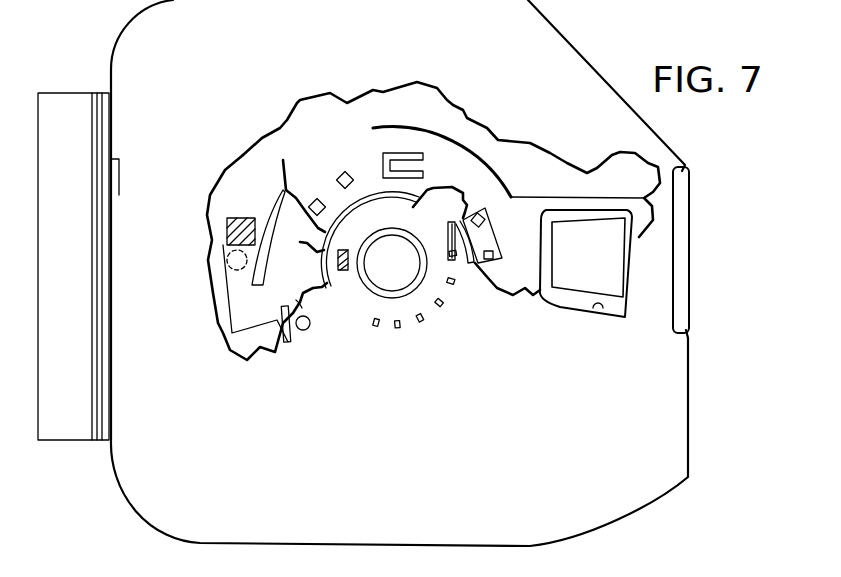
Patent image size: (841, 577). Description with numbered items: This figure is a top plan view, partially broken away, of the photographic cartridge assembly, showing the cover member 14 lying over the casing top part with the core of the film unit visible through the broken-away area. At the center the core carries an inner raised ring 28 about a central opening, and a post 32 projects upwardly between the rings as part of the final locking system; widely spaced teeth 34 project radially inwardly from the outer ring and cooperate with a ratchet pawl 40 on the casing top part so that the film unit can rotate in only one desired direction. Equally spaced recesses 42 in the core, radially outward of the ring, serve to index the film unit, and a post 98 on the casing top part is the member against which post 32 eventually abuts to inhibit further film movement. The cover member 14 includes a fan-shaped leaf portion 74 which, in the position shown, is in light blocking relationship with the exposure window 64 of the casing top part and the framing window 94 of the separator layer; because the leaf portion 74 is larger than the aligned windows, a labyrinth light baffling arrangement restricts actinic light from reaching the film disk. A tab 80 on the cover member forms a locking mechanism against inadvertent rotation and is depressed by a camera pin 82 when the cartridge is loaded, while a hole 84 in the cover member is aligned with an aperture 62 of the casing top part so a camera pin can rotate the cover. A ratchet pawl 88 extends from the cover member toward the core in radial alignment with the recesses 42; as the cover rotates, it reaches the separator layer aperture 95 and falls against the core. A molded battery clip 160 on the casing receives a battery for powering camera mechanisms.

The cover member 14 is at (500, 157).
The inner raised ring 28 is at (402, 297).
The post 32 is at (340, 262).
The widely spaced teeth 34 is at (343, 207).
The ratchet pawl 40 is at (458, 267).
The recesses 42 is at (312, 203).
The aperture 62 is at (300, 303).
The exposure window 64 is at (598, 312).
The leaf portion 74 is at (563, 207).
The tab 80 is at (242, 313).
The camera pin 82 is at (225, 265).
The hole 84 is at (307, 330).
The ratchet pawl 88 is at (405, 167).
The framing window 94 is at (588, 276).
The aperture 95 is at (498, 232).
The post 98 is at (357, 280).
The battery clip 160 is at (63, 100).